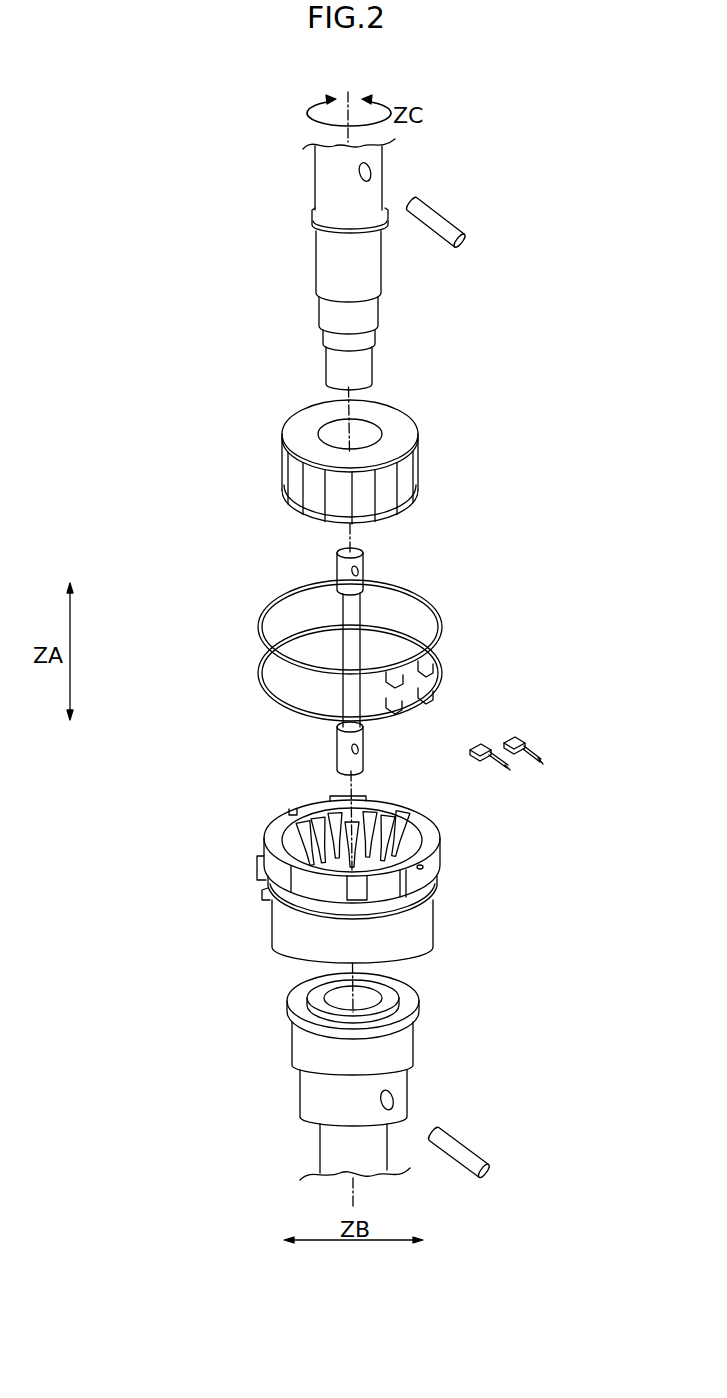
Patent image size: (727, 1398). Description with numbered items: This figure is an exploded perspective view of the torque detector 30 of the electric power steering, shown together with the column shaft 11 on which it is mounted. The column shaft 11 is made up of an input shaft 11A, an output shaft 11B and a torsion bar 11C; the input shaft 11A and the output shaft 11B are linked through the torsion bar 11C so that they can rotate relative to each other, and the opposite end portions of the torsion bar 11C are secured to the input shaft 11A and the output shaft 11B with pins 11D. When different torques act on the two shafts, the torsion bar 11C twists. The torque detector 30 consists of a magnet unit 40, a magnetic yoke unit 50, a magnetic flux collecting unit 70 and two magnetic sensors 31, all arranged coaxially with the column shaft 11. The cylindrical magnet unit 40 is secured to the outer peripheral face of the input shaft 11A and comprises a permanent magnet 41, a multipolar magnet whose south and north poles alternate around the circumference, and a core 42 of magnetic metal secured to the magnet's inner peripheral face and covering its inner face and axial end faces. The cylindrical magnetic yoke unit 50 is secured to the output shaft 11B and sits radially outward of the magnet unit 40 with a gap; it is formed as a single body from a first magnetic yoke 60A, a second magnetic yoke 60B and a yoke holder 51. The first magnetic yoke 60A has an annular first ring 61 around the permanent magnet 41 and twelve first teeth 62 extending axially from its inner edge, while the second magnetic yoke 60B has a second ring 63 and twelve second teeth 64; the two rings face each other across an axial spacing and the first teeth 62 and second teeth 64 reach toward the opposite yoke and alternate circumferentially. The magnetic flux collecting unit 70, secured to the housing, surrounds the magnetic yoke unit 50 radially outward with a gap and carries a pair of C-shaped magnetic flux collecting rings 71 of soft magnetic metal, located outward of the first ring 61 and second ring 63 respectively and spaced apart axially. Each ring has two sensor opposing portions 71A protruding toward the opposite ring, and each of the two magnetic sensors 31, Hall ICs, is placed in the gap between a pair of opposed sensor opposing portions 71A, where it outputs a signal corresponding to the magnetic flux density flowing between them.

The column shaft 11 is at (403, 158).
The input shaft 11A is at (315, 177).
The output shaft 11B is at (302, 1082).
The torsion bar 11C is at (342, 551).
The pins 11D is at (439, 211).
The torque detector 30 is at (128, 388).
The magnetic sensors 31 is at (512, 742).
The magnet unit 40 is at (385, 454).
The permanent magnet 41 is at (285, 468).
The core 42 is at (303, 418).
The magnetic yoke unit 50 is at (375, 862).
The yoke holder 51 is at (427, 927).
The first magnetic yoke 60A is at (433, 863).
The second magnetic yoke 60B is at (430, 888).
The first ring 61 is at (267, 874).
The first teeth 62 is at (285, 832).
The second ring 63 is at (270, 892).
The second teeth 64 is at (328, 815).
The magnetic flux collecting unit 70 is at (375, 661).
The magnetic flux collecting rings 71 is at (260, 636).
The sensor opposing portions 71A is at (432, 672).